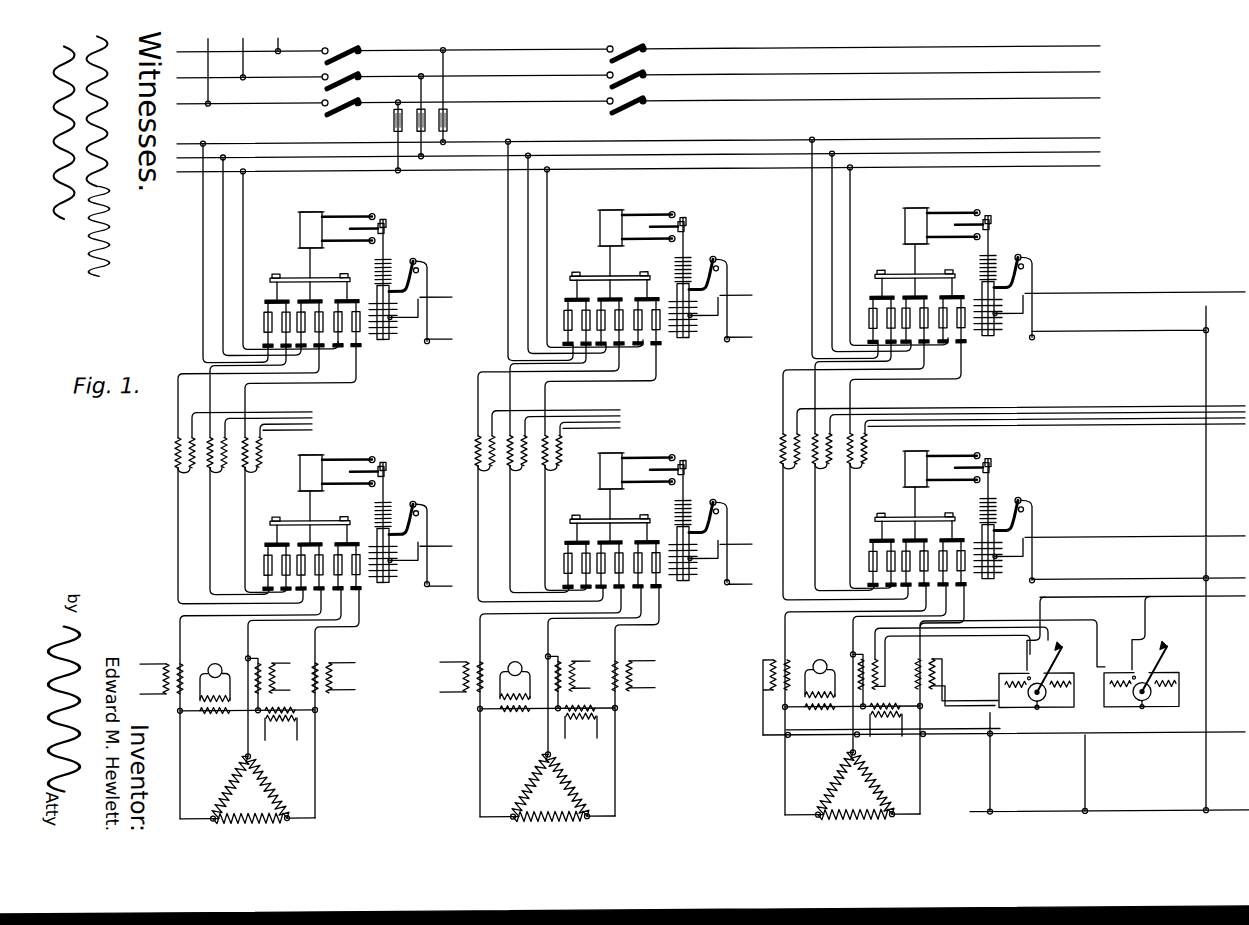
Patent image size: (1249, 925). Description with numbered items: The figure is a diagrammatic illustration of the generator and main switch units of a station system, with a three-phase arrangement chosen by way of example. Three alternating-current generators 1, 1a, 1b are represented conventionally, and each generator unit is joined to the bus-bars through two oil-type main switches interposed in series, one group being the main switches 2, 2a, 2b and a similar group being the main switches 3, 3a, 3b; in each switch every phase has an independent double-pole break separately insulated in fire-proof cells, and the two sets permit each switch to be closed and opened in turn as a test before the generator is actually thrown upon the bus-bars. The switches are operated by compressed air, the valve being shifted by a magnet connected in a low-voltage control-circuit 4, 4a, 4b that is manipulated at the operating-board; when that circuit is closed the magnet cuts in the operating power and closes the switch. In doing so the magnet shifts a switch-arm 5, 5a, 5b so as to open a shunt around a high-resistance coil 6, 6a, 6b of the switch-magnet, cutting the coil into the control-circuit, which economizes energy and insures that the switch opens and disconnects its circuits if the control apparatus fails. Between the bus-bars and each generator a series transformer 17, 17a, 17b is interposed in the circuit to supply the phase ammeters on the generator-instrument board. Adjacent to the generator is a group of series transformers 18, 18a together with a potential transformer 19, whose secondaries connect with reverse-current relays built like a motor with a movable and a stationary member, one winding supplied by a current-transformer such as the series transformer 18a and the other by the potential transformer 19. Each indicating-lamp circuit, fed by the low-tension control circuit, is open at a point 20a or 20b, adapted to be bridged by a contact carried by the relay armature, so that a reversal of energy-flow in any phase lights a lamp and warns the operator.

The alternating-current generator 1 is at (250, 789).
The alternating-current generator 1a is at (550, 787).
The alternating-current generator 1b is at (855, 785).
The main switch 2 is at (323, 522).
The main switch 2a is at (623, 521).
The main switch 2b is at (928, 519).
The main switch 3 is at (323, 279).
The main switch 3a is at (623, 278).
The main switch 3b is at (928, 276).
The control-circuit 4 is at (413, 524).
The control-circuit 4a is at (718, 522).
The control-circuit 4b is at (1023, 518).
The switch-arm 5 is at (409, 534).
The switch-arm 5a is at (709, 530).
The switch-arm 5b is at (1014, 525).
The high-resistance coil 6 is at (390, 590).
The high-resistance coil 6a is at (695, 588).
The high-resistance coil 6b is at (1000, 586).
The series transformer 17 is at (170, 450).
The series transformer 17a is at (823, 474).
The series transformer 17b is at (263, 450).
The series transformer 18 is at (465, 686).
The series transformer 18a is at (655, 670).
The potential transformer 19 is at (651, 660).
The lamp-circuit open point 20a is at (1143, 648).
The lamp-circuit open point 20b is at (1038, 650).